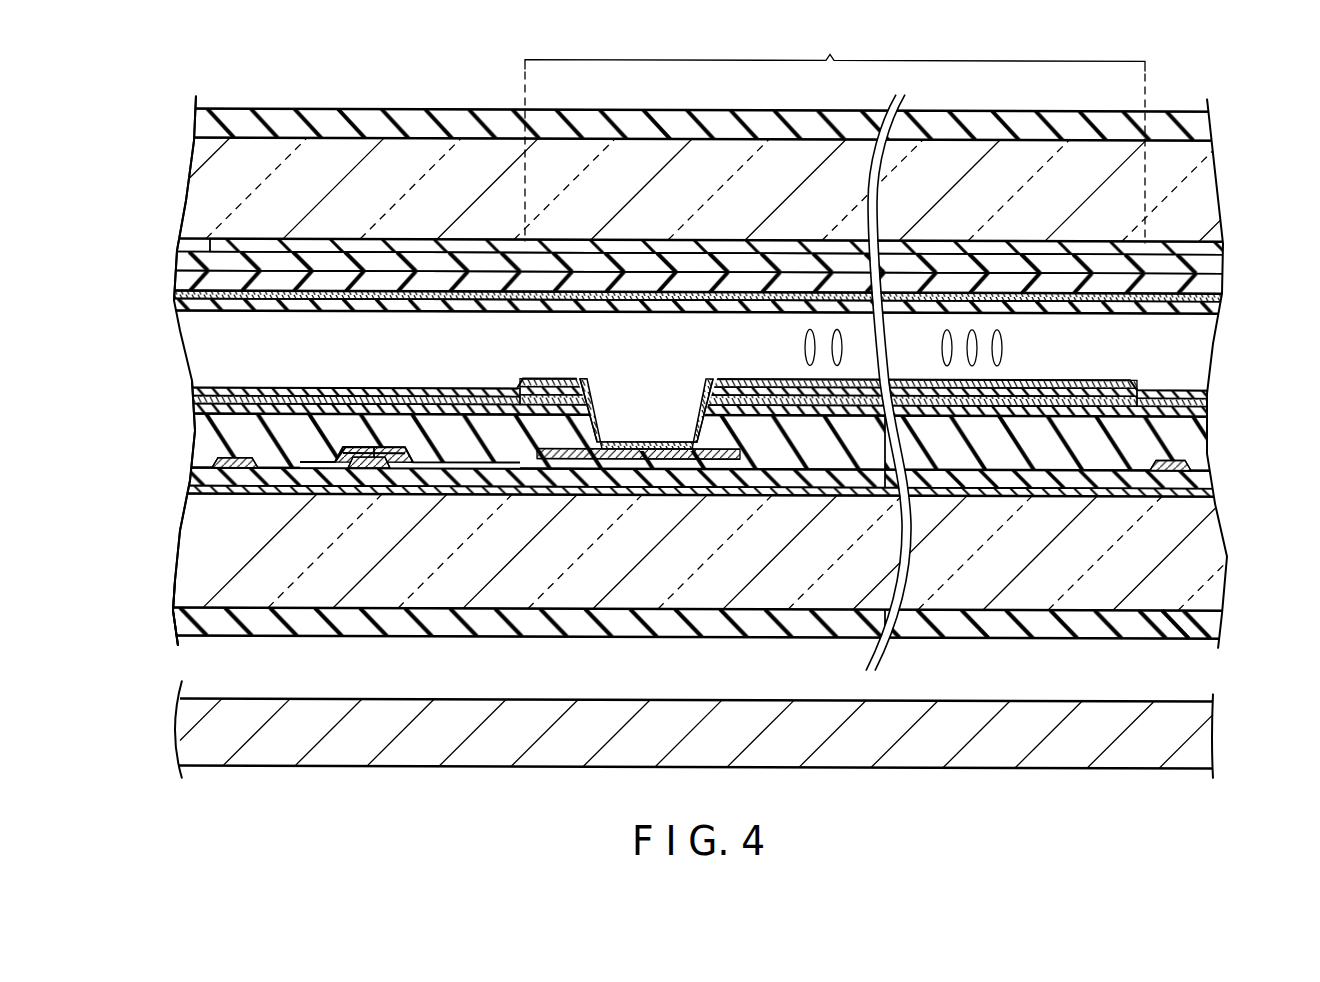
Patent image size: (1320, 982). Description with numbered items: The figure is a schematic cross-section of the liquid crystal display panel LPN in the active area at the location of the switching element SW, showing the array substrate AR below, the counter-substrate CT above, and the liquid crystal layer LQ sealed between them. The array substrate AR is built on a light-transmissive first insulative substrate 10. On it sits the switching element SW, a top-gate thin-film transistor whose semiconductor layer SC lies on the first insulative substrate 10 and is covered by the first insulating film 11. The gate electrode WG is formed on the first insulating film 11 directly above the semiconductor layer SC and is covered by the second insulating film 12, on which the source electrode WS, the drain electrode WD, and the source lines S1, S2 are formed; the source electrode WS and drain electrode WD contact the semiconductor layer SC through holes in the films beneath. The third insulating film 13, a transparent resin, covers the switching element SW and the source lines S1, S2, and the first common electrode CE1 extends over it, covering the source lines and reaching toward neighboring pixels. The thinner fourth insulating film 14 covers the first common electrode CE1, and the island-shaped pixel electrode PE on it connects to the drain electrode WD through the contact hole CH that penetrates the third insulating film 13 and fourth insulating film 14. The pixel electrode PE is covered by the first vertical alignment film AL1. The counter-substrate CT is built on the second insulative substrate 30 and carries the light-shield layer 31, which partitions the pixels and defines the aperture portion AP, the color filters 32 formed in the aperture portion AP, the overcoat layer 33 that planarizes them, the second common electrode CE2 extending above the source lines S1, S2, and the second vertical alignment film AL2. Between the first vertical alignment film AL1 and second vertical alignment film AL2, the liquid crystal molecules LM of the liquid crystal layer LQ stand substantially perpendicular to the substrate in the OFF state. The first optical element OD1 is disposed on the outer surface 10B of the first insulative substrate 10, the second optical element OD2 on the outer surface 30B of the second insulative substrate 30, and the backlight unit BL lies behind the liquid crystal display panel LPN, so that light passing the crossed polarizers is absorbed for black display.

The second insulative substrate 30 is at (198, 190).
The light-shield layer 31 is at (212, 244).
The color filters 32 is at (205, 265).
The overcoat layer 33 is at (200, 287).
The second vertical alignment film AL2 is at (196, 303).
The liquid crystal layer LQ is at (203, 345).
The first vertical alignment film AL1 is at (195, 385).
The fourth insulating film 14 is at (195, 395).
The third insulating film 13 is at (205, 437).
The second insulating film 12 is at (195, 472).
The first insulating film 11 is at (198, 490).
The source line S1 is at (235, 468).
The first insulative substrate 10 is at (195, 587).
The aperture portion AP is at (835, 135).
The outer surface of second insulative substrate 30B is at (1185, 117).
The second optical element OD2 is at (1205, 124).
The liquid crystal display panel LPN is at (1220, 170).
The counter-substrate CT is at (1203, 219).
The second common electrode CE2 is at (1153, 316).
The source electrode WS is at (380, 442).
The drain electrode WD is at (500, 442).
The contact hole CH is at (648, 406).
The pixel electrode PE is at (716, 378).
The liquid crystal molecules LM is at (1005, 343).
The first common electrode CE1 is at (1135, 382).
The source line S2 is at (1165, 459).
The array substrate AR is at (1235, 540).
The first optical element OD1 is at (1207, 619).
The outer surface of first insulative substrate 10B is at (1172, 620).
The backlight unit BL is at (1218, 742).
The switching element SW is at (381, 508).
The semiconductor layer SC is at (397, 470).
The gate electrode WG is at (432, 470).